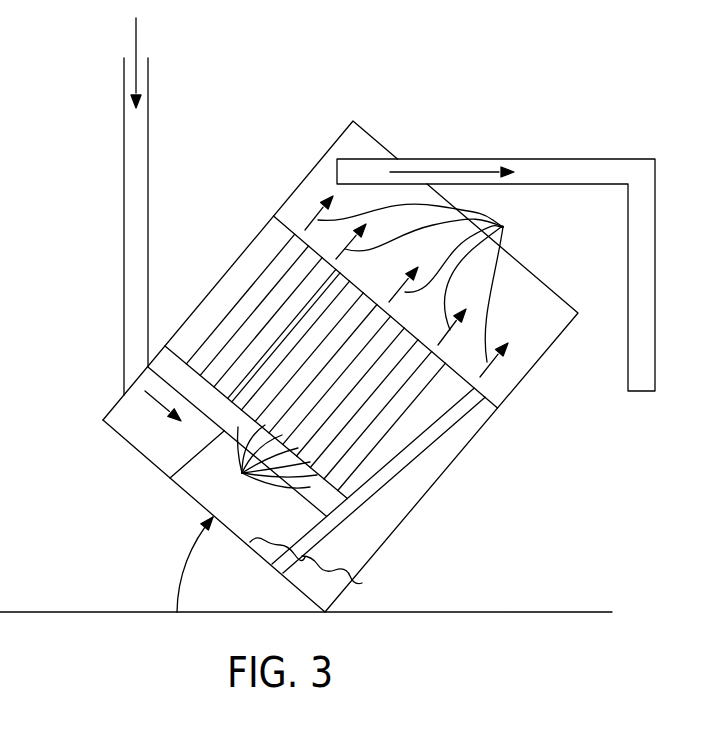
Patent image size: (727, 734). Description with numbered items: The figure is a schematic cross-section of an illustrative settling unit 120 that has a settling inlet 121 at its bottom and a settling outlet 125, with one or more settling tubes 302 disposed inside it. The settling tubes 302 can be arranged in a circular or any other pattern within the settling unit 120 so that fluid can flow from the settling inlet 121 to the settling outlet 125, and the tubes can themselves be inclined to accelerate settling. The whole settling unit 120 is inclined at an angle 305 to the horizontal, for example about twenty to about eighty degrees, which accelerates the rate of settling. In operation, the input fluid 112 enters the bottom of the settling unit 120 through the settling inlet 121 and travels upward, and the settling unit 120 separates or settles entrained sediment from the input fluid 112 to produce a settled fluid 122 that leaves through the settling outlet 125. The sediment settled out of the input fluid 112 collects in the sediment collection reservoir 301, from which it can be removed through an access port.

The input fluid 112 is at (135, 36).
The settling unit 120 is at (437, 479).
The settling inlet 121 is at (123, 195).
The settled fluid 122 is at (452, 170).
The settling outlet 125 is at (496, 241).
The sediment collection reservoir 301 is at (330, 585).
The settling tubes 302 is at (267, 466).
The angle 305 is at (183, 565).